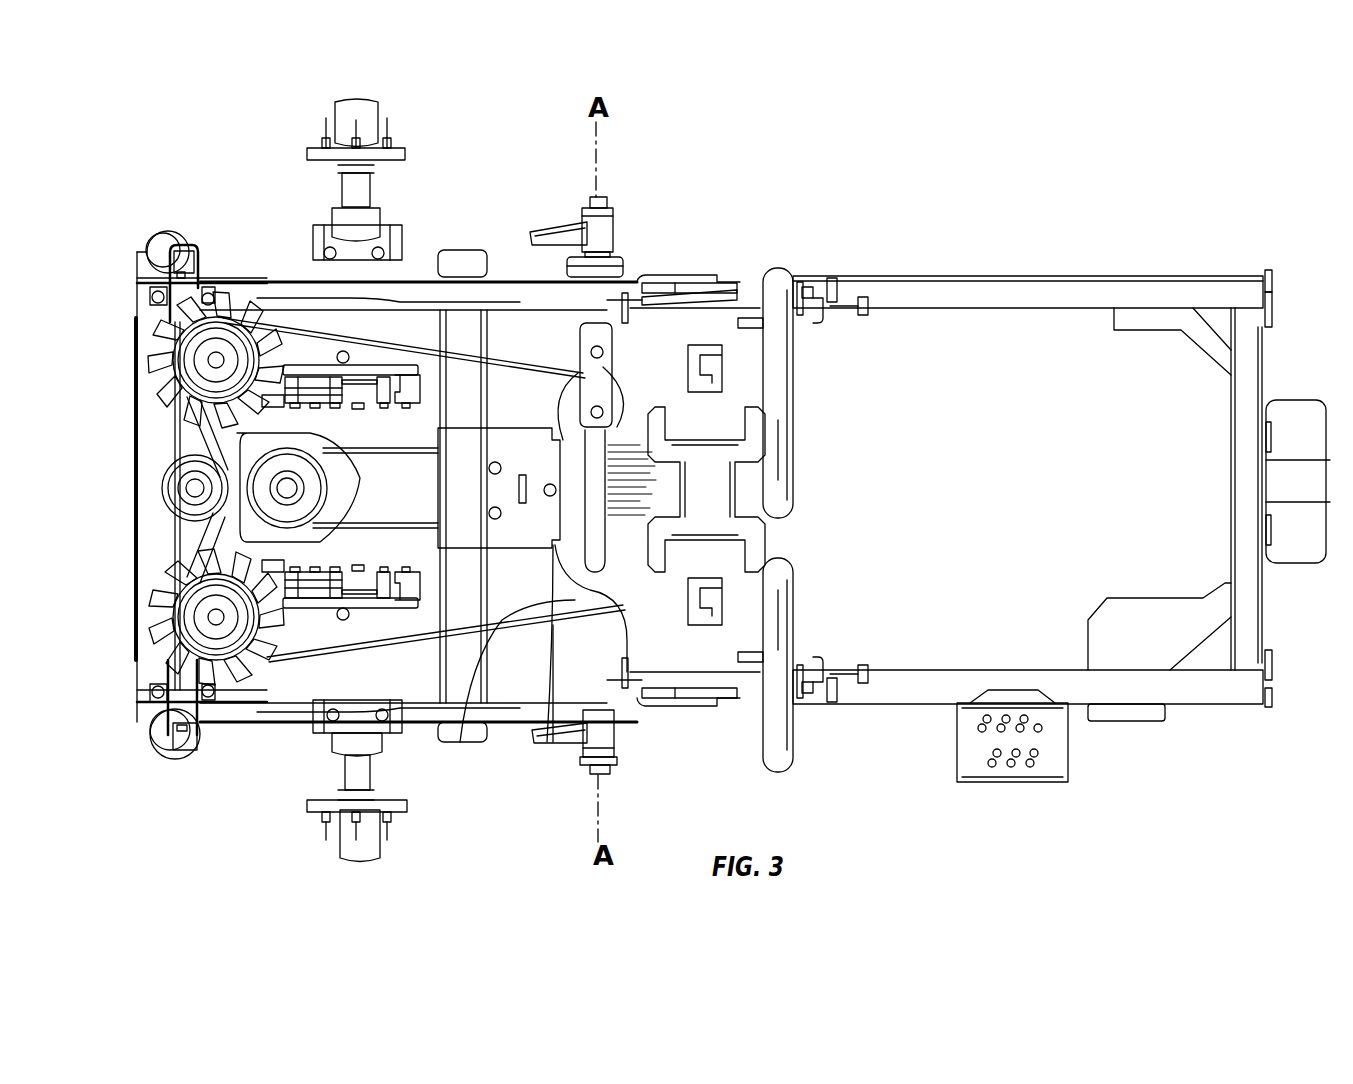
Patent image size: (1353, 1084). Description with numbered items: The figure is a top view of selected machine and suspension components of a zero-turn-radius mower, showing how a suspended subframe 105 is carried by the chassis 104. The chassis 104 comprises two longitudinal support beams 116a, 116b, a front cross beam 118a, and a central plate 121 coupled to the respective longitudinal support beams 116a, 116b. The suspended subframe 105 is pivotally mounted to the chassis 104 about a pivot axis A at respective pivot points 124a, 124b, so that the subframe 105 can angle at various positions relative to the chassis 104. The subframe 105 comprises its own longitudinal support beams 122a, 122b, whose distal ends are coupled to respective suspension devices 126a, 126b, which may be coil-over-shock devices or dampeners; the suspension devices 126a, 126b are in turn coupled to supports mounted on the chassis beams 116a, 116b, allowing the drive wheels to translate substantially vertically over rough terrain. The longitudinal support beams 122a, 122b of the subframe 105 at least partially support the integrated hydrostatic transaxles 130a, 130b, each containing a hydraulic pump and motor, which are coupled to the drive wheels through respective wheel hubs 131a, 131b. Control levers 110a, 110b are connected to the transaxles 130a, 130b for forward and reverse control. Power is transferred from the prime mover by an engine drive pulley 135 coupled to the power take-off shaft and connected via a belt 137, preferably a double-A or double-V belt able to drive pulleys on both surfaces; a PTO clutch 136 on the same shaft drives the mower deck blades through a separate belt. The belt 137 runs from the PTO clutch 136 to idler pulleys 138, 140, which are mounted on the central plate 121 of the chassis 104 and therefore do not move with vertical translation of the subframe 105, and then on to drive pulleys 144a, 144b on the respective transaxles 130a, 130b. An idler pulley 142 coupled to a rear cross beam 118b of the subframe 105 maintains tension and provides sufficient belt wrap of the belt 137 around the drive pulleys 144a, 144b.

The chassis 104 is at (1147, 240).
The suspended subframe 105 is at (195, 835).
The control lever 110a is at (786, 612).
The control lever 110b is at (786, 432).
The longitudinal support beam 116a is at (935, 686).
The longitudinal support beam 116b is at (975, 285).
The front cross beam 118a is at (1250, 372).
The rear cross beam 118b is at (150, 440).
The central plate 121 is at (740, 355).
The longitudinal support beam 122a is at (516, 715).
The longitudinal support beam 122b is at (494, 255).
The pivot point 124a is at (612, 748).
The pivot point 124b is at (618, 238).
The suspension device 126a is at (165, 745).
The suspension device 126b is at (175, 232).
The hydrostatic transaxle 130a is at (325, 627).
The hydrostatic transaxle 130b is at (398, 298).
The wheel hub 131a is at (345, 852).
The wheel hub 131b is at (372, 115).
The engine drive pulley 135 is at (270, 505).
The PTO clutch 136 is at (240, 445).
The belt 137 is at (495, 622).
The idler pulley 138 is at (565, 613).
The idler pulley 140 is at (610, 400).
The idler pulley 142 is at (195, 486).
The drive pulley 144a is at (200, 622).
The drive pulley 144b is at (200, 345).